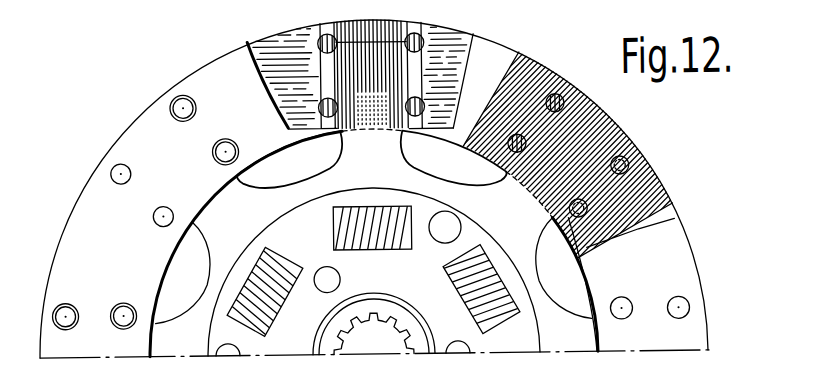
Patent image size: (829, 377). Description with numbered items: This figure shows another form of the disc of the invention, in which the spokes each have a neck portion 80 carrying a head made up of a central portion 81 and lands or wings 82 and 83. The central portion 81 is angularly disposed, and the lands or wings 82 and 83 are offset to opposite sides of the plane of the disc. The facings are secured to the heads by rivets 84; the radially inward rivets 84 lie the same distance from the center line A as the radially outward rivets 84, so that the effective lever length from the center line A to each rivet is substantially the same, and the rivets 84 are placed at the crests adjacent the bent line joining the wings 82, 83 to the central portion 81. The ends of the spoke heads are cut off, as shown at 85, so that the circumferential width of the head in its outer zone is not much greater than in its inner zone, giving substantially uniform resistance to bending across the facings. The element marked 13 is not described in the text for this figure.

The joint line between segments 13 is at (256, 90).
The stator yoke ring 80 is at (354, 155).
The pole shoe 81 is at (333, 137).
The pole shoe 82 is at (446, 114).
The field segment 83 is at (293, 38).
The field segment 84 is at (432, 45).
The field segment 85 is at (499, 46).
The gap between pole shoes A is at (375, 80).